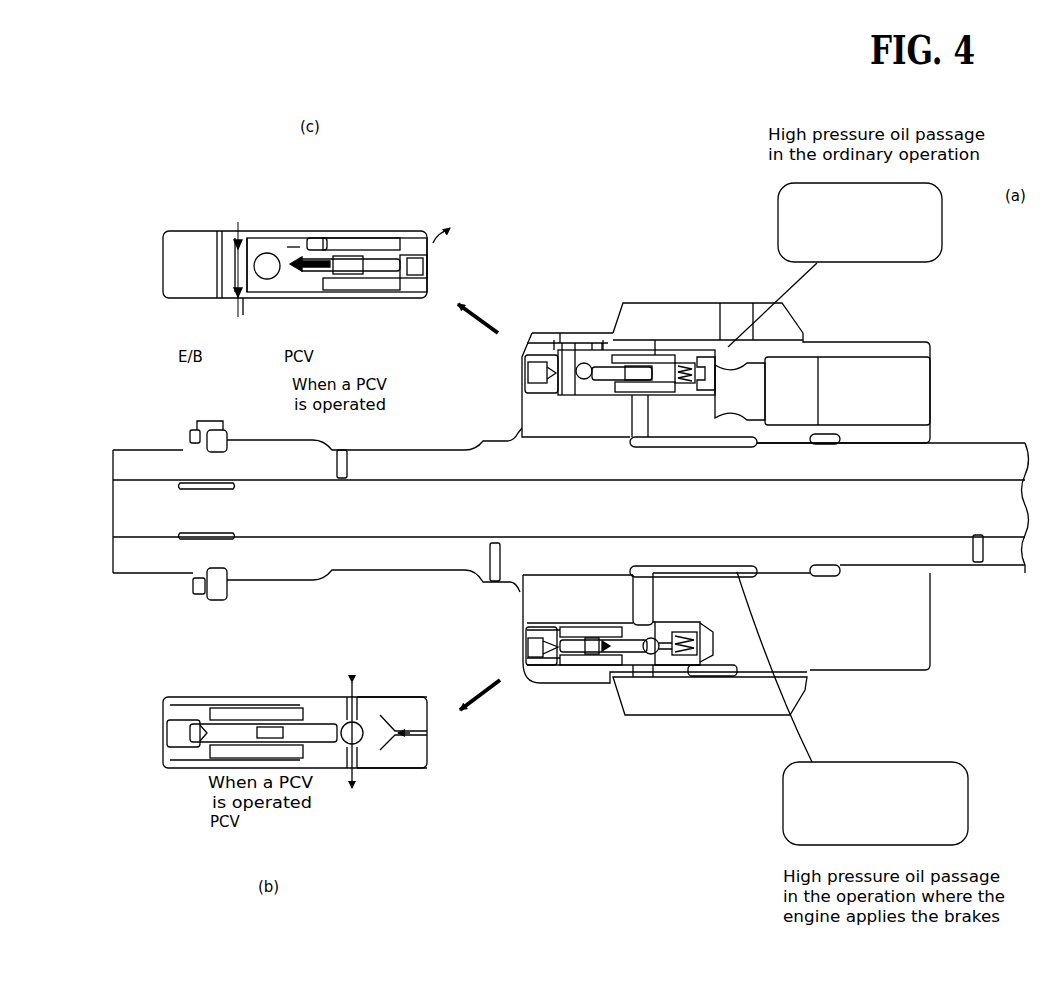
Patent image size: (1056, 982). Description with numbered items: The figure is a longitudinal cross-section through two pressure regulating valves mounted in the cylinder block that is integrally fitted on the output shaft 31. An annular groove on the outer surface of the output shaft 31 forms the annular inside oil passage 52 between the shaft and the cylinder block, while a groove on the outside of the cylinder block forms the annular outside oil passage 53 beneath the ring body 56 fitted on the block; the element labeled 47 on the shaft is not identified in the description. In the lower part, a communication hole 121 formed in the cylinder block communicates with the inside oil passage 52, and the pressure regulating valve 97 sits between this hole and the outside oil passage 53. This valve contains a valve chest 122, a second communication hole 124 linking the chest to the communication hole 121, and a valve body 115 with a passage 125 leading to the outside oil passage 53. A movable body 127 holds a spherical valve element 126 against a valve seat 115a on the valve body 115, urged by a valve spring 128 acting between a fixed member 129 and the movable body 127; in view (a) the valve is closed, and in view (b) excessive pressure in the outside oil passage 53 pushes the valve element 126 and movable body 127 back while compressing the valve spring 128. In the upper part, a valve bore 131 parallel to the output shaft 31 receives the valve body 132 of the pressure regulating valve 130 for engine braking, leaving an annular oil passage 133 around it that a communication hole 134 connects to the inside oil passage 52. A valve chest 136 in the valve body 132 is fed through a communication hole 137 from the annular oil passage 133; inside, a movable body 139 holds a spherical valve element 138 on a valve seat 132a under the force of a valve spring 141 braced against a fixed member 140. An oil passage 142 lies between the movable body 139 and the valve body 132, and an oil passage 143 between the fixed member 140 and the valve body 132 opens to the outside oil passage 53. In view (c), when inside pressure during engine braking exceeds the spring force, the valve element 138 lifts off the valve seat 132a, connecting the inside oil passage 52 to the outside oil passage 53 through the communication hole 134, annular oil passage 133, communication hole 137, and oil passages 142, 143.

The output shaft 31 is at (150, 562).
The oil passage 47 is at (498, 515).
The inside oil passage 52 is at (762, 445).
The outside oil passage 53 is at (733, 677).
The ring body 56 is at (790, 318).
The pressure regulating valve 97 is at (500, 649).
The valve body 115 is at (205, 703).
The valve seat 115a is at (668, 632).
The communication hole 121 is at (643, 602).
The valve chest 122 is at (572, 665).
The second communication hole 124 is at (655, 654).
The passage 125 is at (697, 650).
The spherical valve element 126 is at (662, 638).
The movable body 127 is at (638, 668).
The valve spring 128 is at (527, 625).
The fixed member 129 is at (549, 665).
The pressure regulating valve 130 is at (500, 378).
The valve bore 131 is at (523, 405).
The valve body 132 is at (560, 340).
The valve seat 132a is at (555, 340).
The annular oil passage 133 is at (603, 340).
The communication hole 134 is at (631, 420).
The valve chest 136 is at (641, 352).
The communication hole 137 is at (522, 358).
The spherical valve element 138 is at (580, 341).
The movable body 139 is at (608, 392).
The fixed member 140 is at (702, 340).
The valve spring 141 is at (670, 395).
The oil passage 142 is at (620, 352).
The oil passage 143 is at (668, 345).